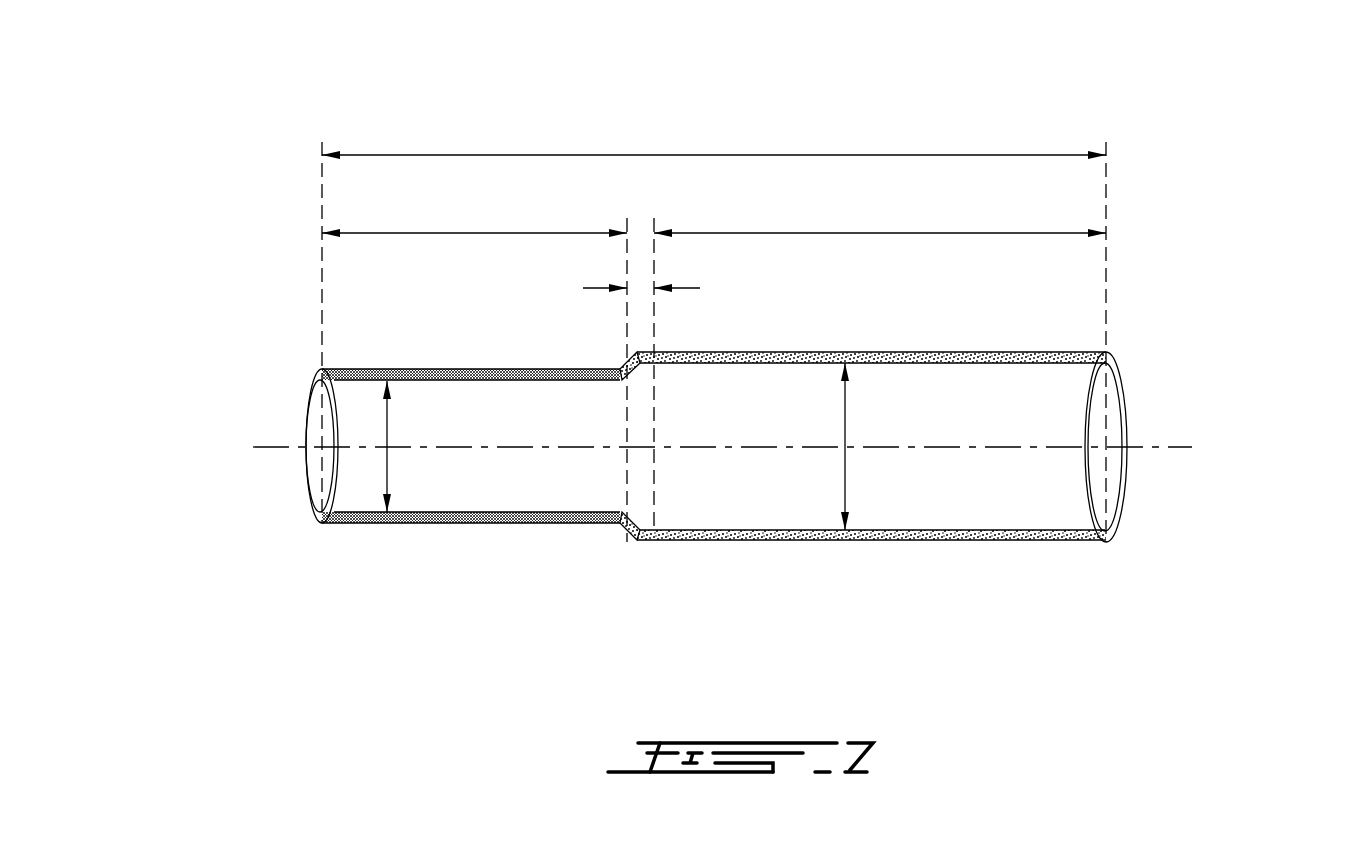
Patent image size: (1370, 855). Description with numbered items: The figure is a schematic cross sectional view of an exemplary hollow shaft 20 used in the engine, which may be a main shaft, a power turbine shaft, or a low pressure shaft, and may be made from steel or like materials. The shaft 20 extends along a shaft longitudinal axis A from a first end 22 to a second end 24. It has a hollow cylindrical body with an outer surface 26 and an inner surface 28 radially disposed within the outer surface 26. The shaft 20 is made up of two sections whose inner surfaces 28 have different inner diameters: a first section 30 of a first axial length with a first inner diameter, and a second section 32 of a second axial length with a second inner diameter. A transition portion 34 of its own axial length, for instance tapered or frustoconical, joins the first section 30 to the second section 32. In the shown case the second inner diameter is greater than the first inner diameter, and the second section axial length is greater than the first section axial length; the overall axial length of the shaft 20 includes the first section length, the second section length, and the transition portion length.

The hollow shaft 20 is at (719, 390).
The first end 22 is at (295, 473).
The second end 24 is at (1142, 498).
The outer surface 26 is at (938, 538).
The inner surface 28 is at (763, 535).
The first section 30 is at (460, 545).
The second section 32 is at (892, 545).
The transition portion 34 is at (630, 540).